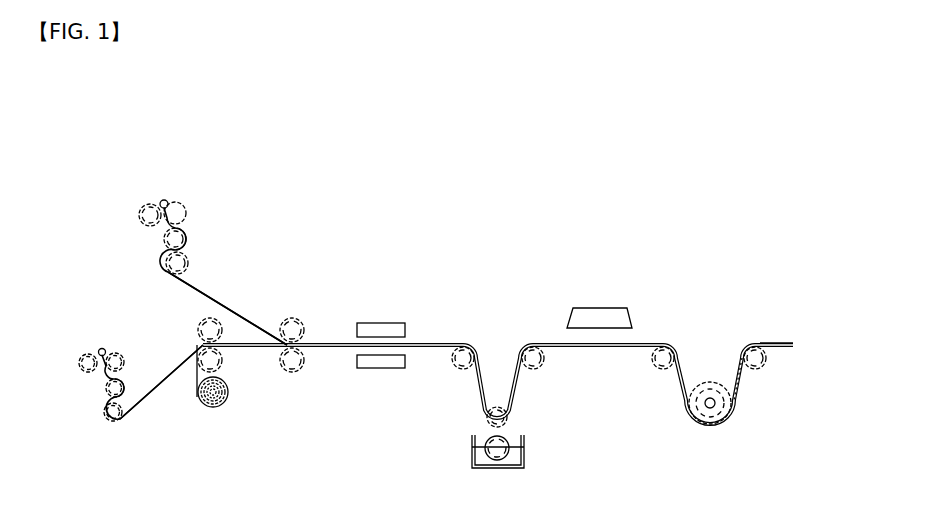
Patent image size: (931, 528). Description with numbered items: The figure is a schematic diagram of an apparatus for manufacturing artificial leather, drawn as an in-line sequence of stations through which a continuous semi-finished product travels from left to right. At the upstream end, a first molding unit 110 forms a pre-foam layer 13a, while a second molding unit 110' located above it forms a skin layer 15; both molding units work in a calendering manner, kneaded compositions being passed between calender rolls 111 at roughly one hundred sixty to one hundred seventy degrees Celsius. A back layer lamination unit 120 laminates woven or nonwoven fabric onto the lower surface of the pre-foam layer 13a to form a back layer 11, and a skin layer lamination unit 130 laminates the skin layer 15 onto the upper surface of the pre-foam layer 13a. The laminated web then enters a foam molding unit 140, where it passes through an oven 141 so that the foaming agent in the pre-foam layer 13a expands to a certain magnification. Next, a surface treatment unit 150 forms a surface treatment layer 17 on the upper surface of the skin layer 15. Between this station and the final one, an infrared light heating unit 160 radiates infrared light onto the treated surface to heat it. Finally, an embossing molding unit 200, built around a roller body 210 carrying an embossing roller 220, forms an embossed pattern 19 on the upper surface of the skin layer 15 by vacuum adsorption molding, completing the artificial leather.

The second molding unit 110' is at (213, 238).
The calender rolls 111 is at (192, 258).
The skin layer 15 is at (230, 307).
The first molding unit 110 is at (120, 351).
The pre-foam layer 13a is at (167, 380).
The back layer 11 is at (197, 380).
The back layer lamination unit 120 is at (232, 366).
The skin layer lamination unit 130 is at (298, 310).
The foam molding unit 140 is at (411, 310).
The oven 141 is at (407, 330).
The surface treatment layer 17 is at (517, 343).
The surface treatment unit 150 is at (465, 433).
The infrared light heating unit 160 is at (614, 300).
The embossed pattern 19 is at (748, 343).
The embossing molding unit 200 is at (710, 420).
The embossing roller 220 is at (707, 432).
The roller body 210 is at (724, 410).